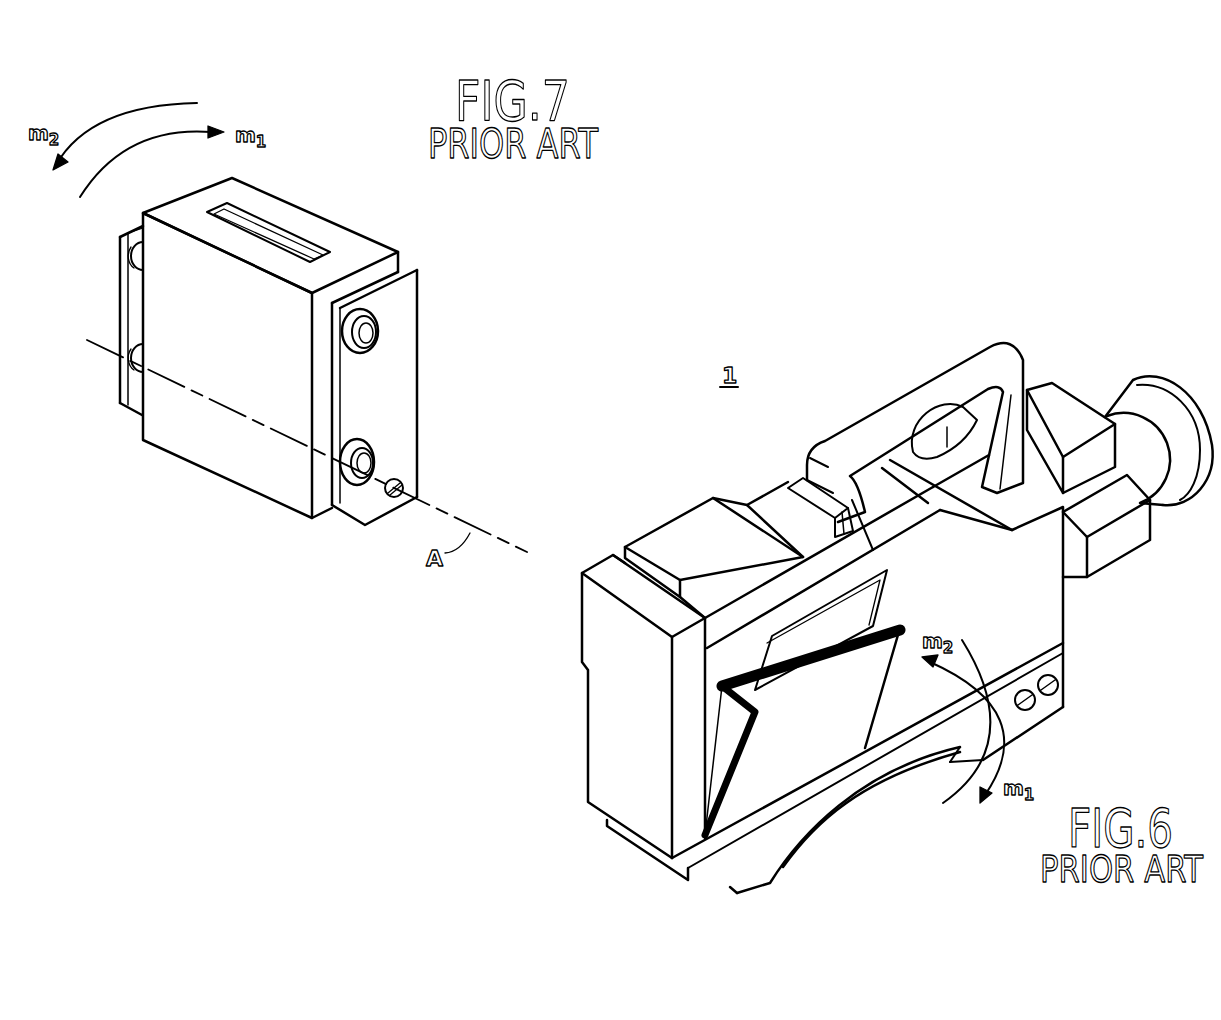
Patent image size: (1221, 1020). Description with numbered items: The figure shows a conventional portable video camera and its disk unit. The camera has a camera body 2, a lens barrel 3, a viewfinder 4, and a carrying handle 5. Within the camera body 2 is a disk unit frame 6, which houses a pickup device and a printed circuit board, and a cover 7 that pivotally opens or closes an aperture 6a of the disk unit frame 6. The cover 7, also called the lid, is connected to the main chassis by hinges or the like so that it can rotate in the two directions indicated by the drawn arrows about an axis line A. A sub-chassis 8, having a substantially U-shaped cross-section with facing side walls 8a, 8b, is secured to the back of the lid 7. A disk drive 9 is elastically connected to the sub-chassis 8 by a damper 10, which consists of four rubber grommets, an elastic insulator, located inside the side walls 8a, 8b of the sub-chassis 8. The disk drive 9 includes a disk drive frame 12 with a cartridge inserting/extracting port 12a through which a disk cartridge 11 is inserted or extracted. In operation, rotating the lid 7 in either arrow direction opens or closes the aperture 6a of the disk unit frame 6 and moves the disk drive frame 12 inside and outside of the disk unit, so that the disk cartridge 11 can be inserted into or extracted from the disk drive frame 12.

In FIG. 6, the camera body 2 is at (1080, 615).
In FIG. 6, the lens barrel 3 is at (1140, 478).
In FIG. 6, the viewfinder 4 is at (967, 420).
In FIG. 6, the carrying handle 5 is at (847, 438).
In FIG. 6, the disk unit frame 6 is at (770, 505).
In FIG. 6, the aperture 6a is at (720, 662).
In FIG. 6, the cover 7 is at (785, 755).
In FIG. 7, the sub-chassis 8 is at (376, 232).
In FIG. 6, the sub-chassis 8 is at (720, 708).
In FIG. 7, the side wall 8a is at (400, 368).
In FIG. 6, the side wall 8a is at (720, 736).
In FIG. 7, the side wall 8b is at (120, 308).
In FIG. 6, the side wall 8b is at (893, 625).
In FIG. 7, the disk drive 9 is at (192, 485).
In FIG. 6, the disk drive 9 is at (727, 640).
In FIG. 7, the damper 10 is at (130, 254).
In FIG. 6, the disk cartridge 11 is at (884, 590).
In FIG. 7, the disk drive frame 12 is at (278, 500).
In FIG. 6, the disk drive frame 12 is at (725, 862).
In FIG. 7, the cartridge inserting/extracting port 12a is at (300, 244).
In FIG. 6, the cartridge inserting/extracting port 12a is at (832, 636).